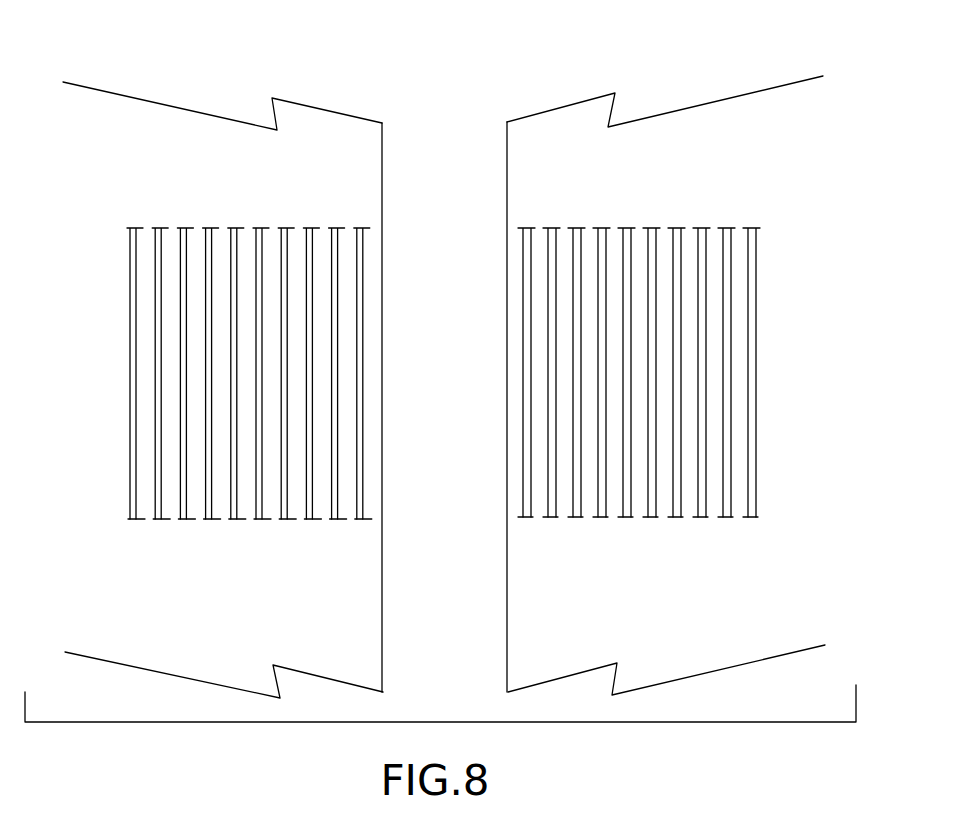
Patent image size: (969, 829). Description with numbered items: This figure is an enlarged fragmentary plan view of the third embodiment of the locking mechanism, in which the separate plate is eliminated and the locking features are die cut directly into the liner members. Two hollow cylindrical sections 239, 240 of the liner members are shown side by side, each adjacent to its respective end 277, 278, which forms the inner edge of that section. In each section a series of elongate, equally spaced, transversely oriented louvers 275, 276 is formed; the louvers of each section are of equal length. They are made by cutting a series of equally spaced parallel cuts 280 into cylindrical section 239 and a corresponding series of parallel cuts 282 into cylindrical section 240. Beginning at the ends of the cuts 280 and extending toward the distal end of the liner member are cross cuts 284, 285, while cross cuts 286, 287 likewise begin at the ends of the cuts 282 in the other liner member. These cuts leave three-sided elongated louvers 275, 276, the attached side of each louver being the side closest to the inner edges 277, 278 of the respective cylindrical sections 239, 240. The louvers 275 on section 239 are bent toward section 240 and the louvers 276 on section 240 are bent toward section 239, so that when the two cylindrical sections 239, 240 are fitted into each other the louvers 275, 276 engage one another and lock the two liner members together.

The hollow cylindrical section 239 is at (223, 105).
The hollow cylindrical section 240 is at (663, 102).
The end of liner member 277 is at (383, 134).
The end of liner member 278 is at (507, 172).
The cross cut 285 is at (208, 228).
The louver 275 is at (325, 233).
The cut 280 is at (136, 443).
The cross cut 284 is at (165, 519).
The cross cut 287 is at (556, 225).
The louver 276 is at (660, 232).
The cut 282 is at (533, 443).
The cross cut 286 is at (528, 517).